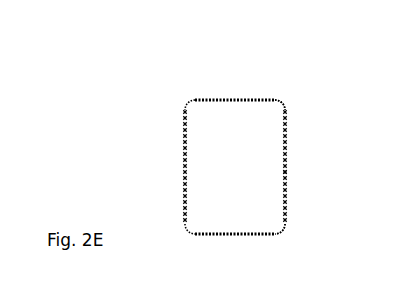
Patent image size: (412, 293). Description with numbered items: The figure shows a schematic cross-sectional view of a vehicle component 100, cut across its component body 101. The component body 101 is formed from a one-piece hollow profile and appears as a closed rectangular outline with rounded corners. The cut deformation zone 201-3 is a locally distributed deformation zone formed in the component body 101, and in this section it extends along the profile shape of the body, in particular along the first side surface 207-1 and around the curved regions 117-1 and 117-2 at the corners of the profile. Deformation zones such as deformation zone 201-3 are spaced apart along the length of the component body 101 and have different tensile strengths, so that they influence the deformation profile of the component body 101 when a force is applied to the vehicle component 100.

The vehicle component 100 is at (158, 145).
The component body 101 is at (241, 99).
The curved region 117-1 is at (285, 104).
The deformation zone 201-3 is at (284, 143).
The first side surface 207-1 is at (286, 172).
The curved region 117-2 is at (279, 232).